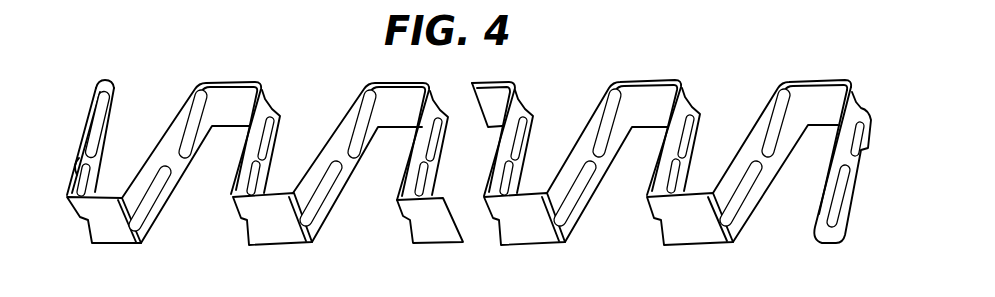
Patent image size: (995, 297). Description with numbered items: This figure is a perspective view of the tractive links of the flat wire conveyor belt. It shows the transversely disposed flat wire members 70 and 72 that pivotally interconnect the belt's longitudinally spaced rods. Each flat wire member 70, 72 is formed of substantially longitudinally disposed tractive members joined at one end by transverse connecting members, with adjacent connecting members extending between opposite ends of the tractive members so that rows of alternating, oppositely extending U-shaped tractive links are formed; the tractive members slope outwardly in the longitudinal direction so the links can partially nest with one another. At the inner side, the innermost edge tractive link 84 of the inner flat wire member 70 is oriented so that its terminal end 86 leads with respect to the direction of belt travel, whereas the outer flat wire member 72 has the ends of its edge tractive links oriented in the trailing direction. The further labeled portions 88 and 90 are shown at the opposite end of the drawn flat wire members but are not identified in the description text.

The inner flat wire member 70 is at (262, 68).
The outer flat wire member 72 is at (700, 88).
The innermost edge tractive link 84 is at (85, 158).
The terminal end 86 is at (98, 80).
The top plate portion 88 is at (824, 110).
The second end portion 90 is at (828, 239).